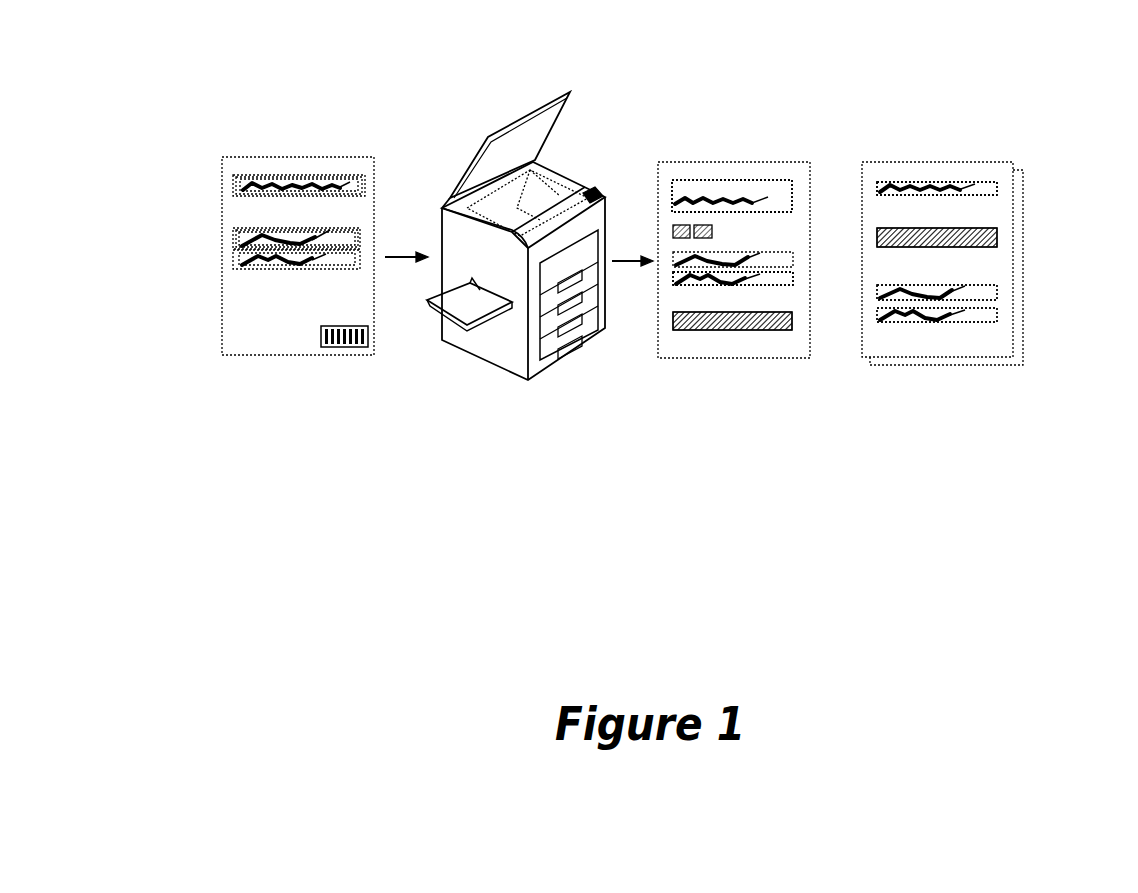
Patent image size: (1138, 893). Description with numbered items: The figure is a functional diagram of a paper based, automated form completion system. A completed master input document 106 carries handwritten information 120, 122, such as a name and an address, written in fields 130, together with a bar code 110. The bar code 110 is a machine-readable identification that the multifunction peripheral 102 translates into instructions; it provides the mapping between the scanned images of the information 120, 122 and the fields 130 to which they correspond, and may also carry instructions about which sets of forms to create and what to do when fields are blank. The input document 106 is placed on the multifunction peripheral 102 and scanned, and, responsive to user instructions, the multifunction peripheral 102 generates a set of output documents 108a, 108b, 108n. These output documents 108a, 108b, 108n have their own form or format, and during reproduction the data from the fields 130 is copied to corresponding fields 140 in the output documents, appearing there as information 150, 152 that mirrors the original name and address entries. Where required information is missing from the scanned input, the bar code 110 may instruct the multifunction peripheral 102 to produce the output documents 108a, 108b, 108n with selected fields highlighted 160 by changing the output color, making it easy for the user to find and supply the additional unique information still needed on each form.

The multifunction peripheral 102 is at (505, 362).
The input document 106 is at (290, 157).
The output document 108a is at (738, 162).
The output document 108b is at (922, 162).
The output document 108n is at (1013, 170).
The bar code 110 is at (345, 350).
The information 120 is at (240, 190).
The information 122 is at (240, 247).
The fields 130 is at (348, 228).
The corresponding fields 140 is at (877, 193).
The information 150 is at (890, 184).
The information 152 is at (747, 285).
The highlighted fields 160 is at (732, 318).